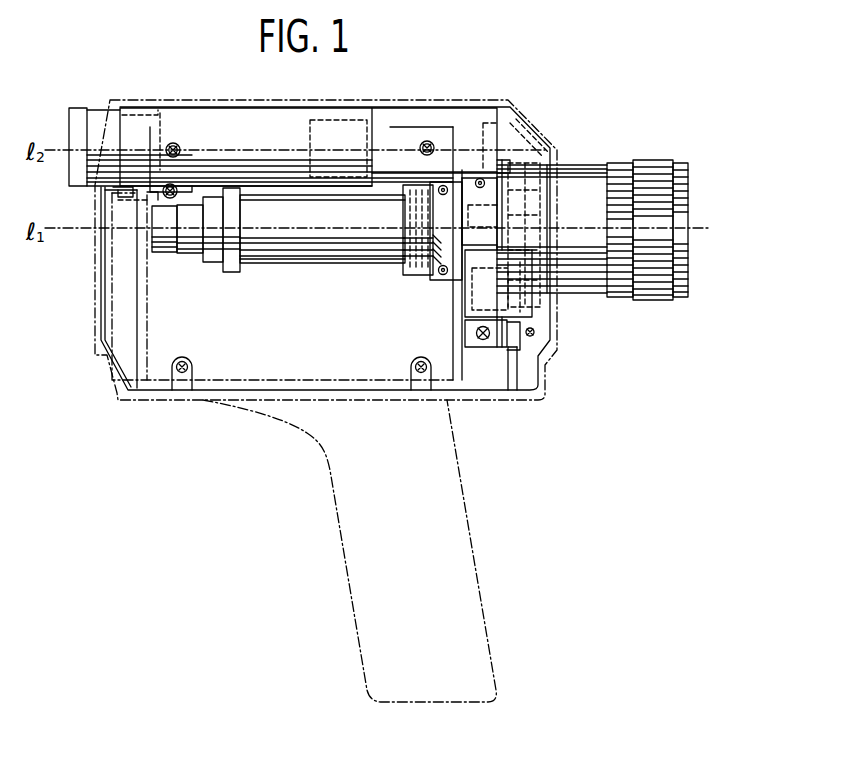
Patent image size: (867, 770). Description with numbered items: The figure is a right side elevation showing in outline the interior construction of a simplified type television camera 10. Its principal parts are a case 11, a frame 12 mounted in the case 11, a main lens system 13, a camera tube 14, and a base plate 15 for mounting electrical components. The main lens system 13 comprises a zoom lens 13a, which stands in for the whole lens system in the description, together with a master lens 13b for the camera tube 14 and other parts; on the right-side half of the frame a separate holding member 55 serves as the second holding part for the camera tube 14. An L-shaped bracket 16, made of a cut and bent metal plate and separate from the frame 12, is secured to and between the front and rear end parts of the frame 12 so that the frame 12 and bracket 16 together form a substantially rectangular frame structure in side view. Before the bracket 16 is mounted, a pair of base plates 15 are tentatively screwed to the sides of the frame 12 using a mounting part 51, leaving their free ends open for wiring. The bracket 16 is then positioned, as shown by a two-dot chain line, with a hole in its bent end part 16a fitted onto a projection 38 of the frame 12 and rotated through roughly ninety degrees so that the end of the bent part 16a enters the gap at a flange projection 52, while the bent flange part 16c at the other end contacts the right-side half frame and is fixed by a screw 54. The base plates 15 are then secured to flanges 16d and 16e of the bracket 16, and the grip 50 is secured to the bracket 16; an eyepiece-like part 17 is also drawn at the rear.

The simplified type television camera 10 is at (546, 89).
The case 11 is at (294, 100).
The frame 12 is at (381, 117).
The main lens system 13 is at (592, 207).
The zoom lens 13a is at (653, 230).
The master lens 13b is at (480, 218).
The camera (pickup) tube 14 is at (318, 262).
The base plate 15 is at (281, 380).
The L-shaped bracket 16 is at (101, 277).
The bent end part 16a is at (157, 198).
The bent flange part 16c is at (495, 343).
The flange 16d is at (183, 390).
The flange 16e is at (421, 392).
The eyepiece 17 is at (94, 118).
The projection 38 is at (123, 202).
The grip 50 is at (338, 540).
The mounting part 51 is at (174, 143).
The flange projection 52 is at (152, 193).
The screw 54 is at (474, 334).
The holding member 55 is at (421, 276).